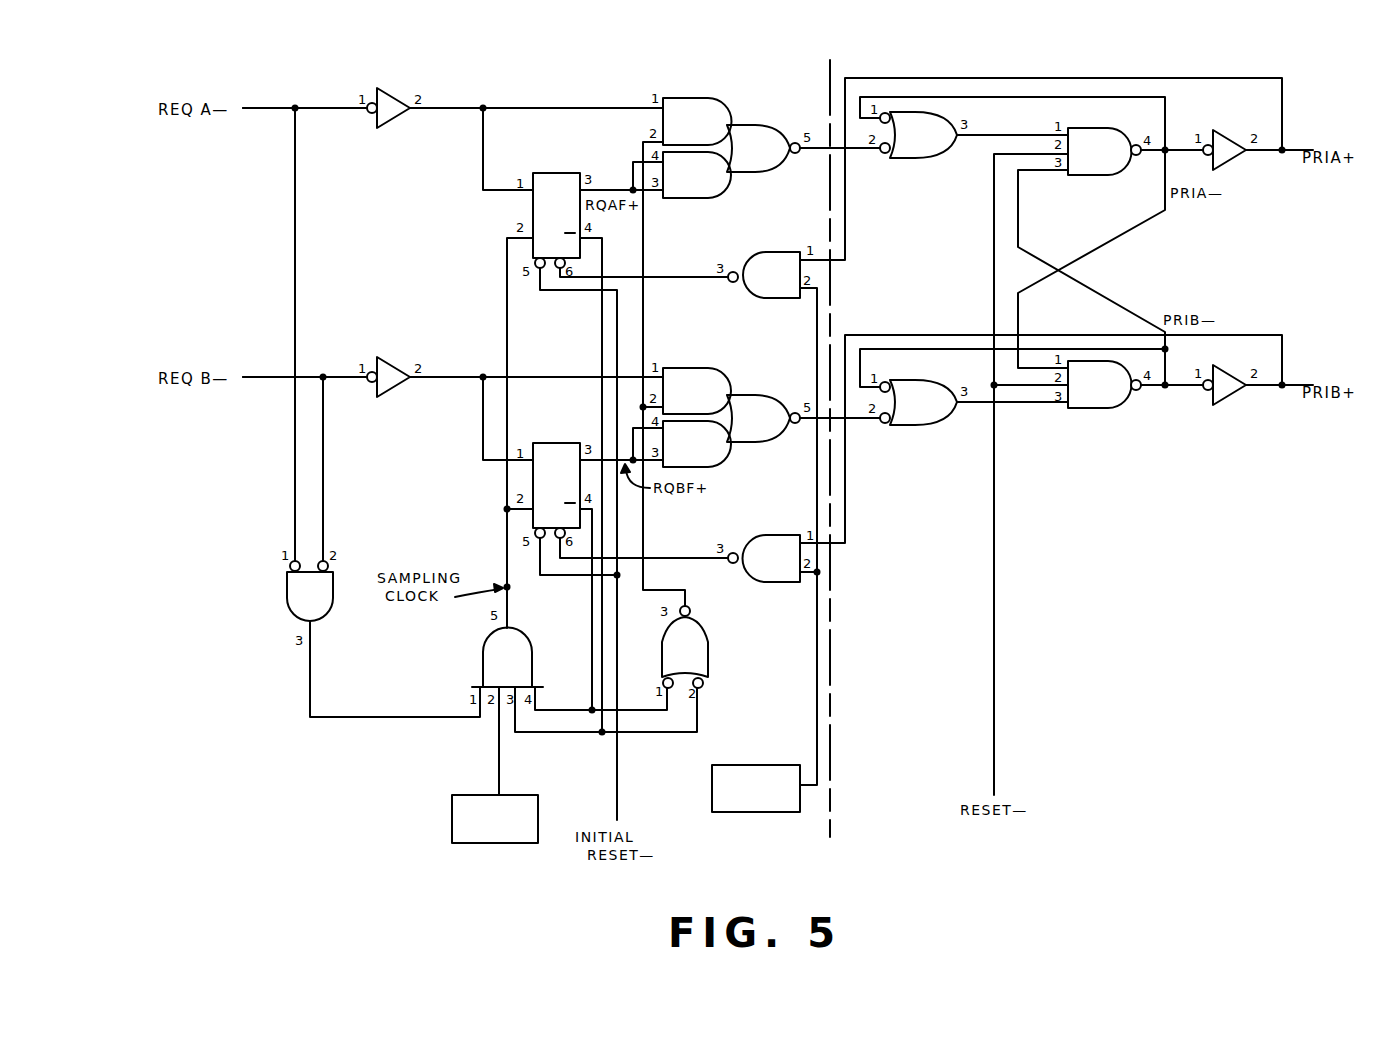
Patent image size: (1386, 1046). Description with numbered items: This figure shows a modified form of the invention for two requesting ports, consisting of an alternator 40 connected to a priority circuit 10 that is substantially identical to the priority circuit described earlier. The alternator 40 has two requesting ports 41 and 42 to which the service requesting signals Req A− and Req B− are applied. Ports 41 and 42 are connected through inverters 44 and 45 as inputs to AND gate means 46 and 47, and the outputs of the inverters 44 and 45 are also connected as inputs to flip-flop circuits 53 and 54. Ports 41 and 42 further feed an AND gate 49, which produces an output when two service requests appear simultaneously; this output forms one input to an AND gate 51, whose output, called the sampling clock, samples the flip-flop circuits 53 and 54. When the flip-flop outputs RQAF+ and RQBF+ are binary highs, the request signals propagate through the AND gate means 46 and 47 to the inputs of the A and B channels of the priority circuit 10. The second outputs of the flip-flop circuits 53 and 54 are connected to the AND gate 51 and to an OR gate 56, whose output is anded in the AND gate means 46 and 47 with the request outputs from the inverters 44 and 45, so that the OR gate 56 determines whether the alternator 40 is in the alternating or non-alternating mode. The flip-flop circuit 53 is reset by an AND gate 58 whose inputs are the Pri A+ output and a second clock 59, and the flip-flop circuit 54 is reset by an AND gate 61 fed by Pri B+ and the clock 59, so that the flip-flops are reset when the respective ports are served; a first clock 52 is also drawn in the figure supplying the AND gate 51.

The priority circuit 10 is at (1073, 80).
The alternator 40 is at (462, 93).
The requesting port 41 is at (258, 108).
The requesting port 42 is at (258, 377).
The inverter 44 is at (398, 96).
The inverter 45 is at (396, 367).
The AND gate means 46 is at (728, 122).
The AND gate means 47 is at (730, 382).
The AND gate 49 is at (287, 588).
The AND gate 51 is at (483, 657).
The clock 1 52 is at (478, 843).
The flip-flop circuit 53 is at (553, 173).
The flip-flop circuit 54 is at (553, 443).
The OR gate 56 is at (710, 655).
The AND gate 58 is at (770, 252).
The second clock 59 is at (763, 765).
The AND gate 61 is at (755, 535).